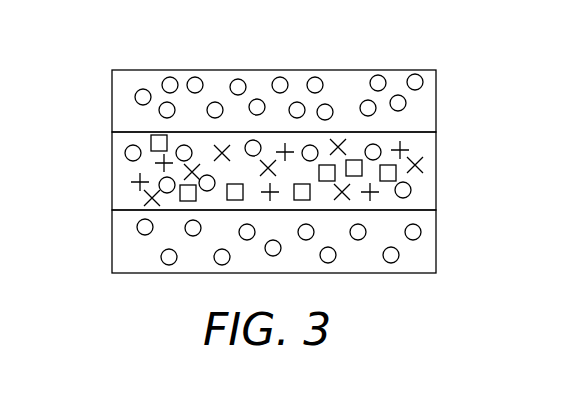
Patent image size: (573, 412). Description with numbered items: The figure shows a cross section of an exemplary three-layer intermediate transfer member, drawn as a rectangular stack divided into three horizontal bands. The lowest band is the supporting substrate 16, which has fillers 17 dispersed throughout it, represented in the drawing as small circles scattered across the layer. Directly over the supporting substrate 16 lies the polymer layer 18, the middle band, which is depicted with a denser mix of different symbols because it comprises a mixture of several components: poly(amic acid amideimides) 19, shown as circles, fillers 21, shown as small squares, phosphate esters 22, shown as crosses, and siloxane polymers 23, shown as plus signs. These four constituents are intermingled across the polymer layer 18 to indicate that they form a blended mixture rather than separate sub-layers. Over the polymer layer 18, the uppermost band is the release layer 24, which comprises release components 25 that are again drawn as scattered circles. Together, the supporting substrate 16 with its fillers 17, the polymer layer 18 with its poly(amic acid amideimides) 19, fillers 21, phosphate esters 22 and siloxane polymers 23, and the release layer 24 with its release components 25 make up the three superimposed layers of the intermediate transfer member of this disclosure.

The supporting substrate 16 is at (112, 240).
The fillers 17 is at (358, 240).
The polymer layer 18 is at (112, 166).
The poly(amic acid amideimides) 19 is at (375, 144).
The fillers 21 is at (355, 160).
The phosphate esters 22 is at (418, 164).
The siloxane polymers 23 is at (136, 185).
The release layer 24 is at (436, 98).
The release components 25 is at (168, 78).